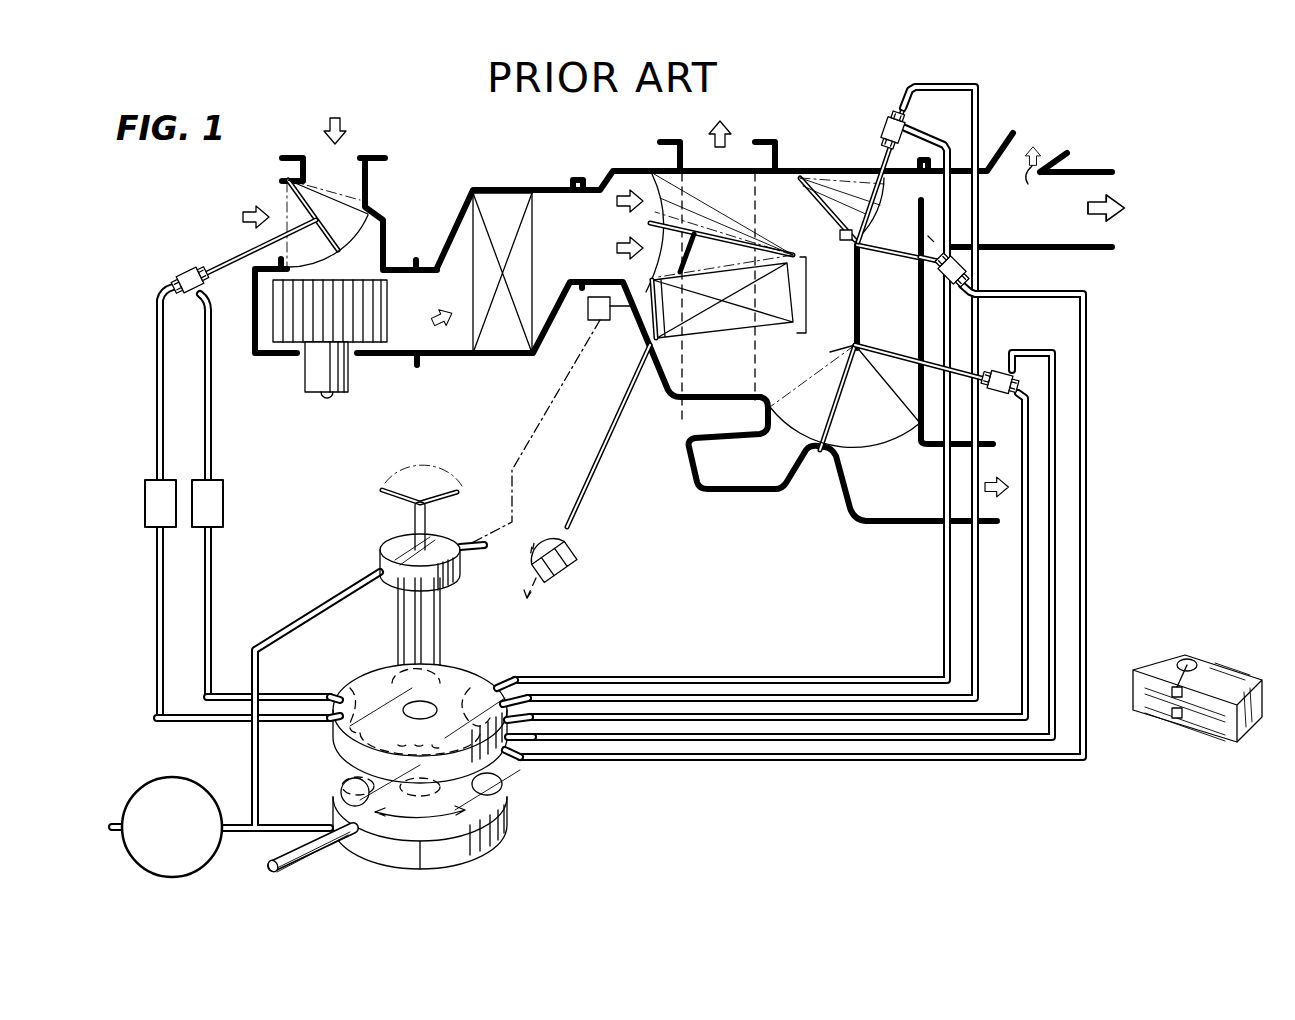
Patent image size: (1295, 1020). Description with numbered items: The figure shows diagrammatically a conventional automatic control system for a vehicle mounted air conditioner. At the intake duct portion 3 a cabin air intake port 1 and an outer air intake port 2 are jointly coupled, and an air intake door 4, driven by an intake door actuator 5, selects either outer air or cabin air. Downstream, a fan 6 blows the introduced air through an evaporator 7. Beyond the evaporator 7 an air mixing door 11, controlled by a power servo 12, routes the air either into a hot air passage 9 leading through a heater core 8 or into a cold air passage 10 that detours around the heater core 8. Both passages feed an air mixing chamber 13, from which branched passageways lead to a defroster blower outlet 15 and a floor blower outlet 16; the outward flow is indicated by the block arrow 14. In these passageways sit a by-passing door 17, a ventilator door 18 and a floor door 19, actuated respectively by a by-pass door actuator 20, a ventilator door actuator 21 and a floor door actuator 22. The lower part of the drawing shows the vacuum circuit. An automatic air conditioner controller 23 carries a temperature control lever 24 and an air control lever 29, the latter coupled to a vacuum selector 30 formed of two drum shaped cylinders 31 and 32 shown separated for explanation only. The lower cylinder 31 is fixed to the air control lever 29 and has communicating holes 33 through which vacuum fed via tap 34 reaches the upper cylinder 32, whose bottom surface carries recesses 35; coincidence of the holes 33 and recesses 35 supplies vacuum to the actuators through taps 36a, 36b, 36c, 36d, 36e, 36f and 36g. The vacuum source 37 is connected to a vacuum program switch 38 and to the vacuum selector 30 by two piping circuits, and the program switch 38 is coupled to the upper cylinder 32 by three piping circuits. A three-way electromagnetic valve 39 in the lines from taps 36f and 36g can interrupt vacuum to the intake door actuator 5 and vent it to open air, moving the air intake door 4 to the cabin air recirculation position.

The cabin air intake port 1 is at (242, 215).
The outer air intake port 2 is at (348, 124).
The intake duct portion 3 is at (388, 233).
The air intake door 4 is at (335, 224).
The intake door actuator 5 is at (190, 268).
The fan 6 is at (290, 347).
The evaporator 7 is at (510, 340).
The heater core 8 is at (736, 322).
The hot air passage 9 is at (614, 250).
The cold air passage 10 is at (614, 205).
The air mixing door 11 is at (653, 175).
The power servo 12 is at (585, 543).
The air mixing chamber 13 is at (890, 213).
The outlet flow 14 is at (718, 137).
The defroster blower outlet 15 is at (1086, 210).
The floor blower outlet 16 is at (983, 488).
The by-passing door 17 is at (899, 264).
The ventilator door 18 is at (826, 172).
The floor door 19 is at (842, 412).
The by-pass door actuator 20 is at (968, 267).
The ventilator door actuator 21 is at (888, 114).
The floor door actuator 22 is at (1012, 370).
The automatic air conditioner controller 23 is at (1234, 659).
The temperature control lever 24 is at (1174, 720).
The air control lever 29 is at (288, 854).
The vacuum selector 30 is at (467, 662).
The lower cylinder 31 is at (400, 864).
The upper cylinder 32 is at (400, 682).
The communicating holes 33 is at (342, 778).
The tap 34 is at (324, 824).
The recesses 35 is at (486, 692).
The tap 36a is at (522, 762).
The tap 36b is at (536, 745).
The tap 36c is at (538, 725).
The tap 36d is at (548, 688).
The tap 36e is at (510, 688).
The tap 36f is at (312, 696).
The tap 36g is at (316, 720).
The vacuum source 37 is at (172, 778).
The vacuum program switch 38 is at (386, 546).
The 3-way electromagnetic valve 39 is at (224, 514).